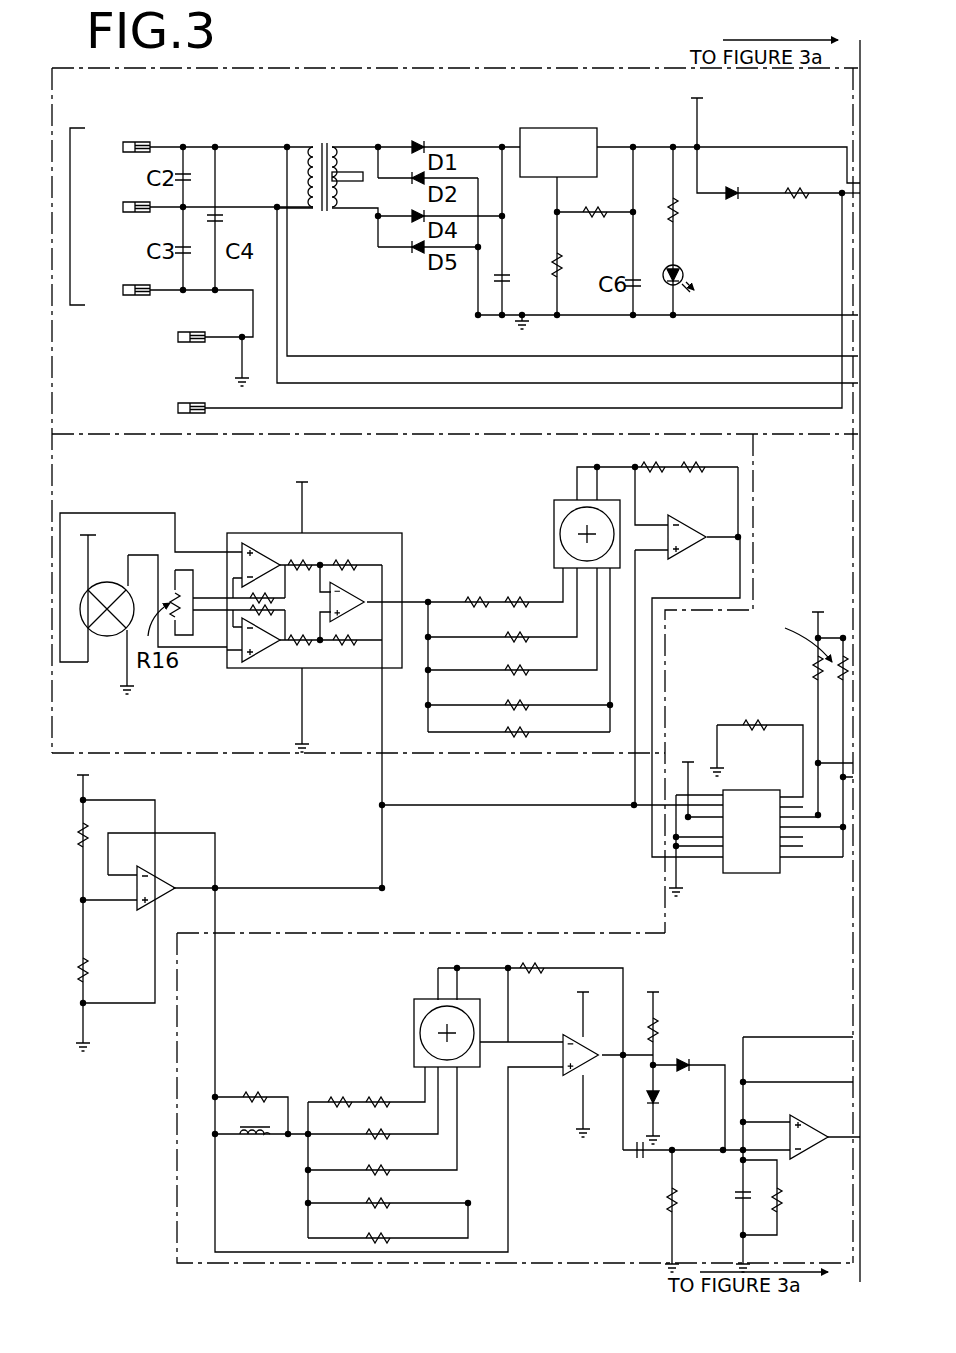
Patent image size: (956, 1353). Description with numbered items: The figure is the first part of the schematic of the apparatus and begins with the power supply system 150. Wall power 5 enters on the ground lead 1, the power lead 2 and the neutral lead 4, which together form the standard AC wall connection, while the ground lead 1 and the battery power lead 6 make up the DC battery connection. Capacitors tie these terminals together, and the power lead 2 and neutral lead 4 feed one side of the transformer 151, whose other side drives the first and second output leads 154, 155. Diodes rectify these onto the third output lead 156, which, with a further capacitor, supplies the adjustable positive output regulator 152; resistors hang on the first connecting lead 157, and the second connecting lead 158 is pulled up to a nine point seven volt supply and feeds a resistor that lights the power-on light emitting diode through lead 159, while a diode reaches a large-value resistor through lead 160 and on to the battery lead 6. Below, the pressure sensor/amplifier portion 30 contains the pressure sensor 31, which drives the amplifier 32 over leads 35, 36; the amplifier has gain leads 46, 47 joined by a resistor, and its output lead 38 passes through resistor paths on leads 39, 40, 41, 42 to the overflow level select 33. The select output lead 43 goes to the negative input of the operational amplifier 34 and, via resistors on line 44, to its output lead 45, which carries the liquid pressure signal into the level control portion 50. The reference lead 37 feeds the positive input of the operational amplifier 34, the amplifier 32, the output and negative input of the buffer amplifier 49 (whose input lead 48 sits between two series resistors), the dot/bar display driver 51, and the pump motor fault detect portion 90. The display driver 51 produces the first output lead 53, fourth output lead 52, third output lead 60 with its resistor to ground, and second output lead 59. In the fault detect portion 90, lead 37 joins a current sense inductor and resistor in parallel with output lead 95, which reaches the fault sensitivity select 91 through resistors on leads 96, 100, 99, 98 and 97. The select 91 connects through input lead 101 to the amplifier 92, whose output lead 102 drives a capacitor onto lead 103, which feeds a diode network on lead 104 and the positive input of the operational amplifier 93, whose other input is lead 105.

The power supply system 150 is at (88, 196).
The wall power connection 5 is at (70, 262).
The power lead 2 is at (305, 143).
The neutral lead 4 is at (310, 242).
The ground lead 1 is at (748, 320).
The battery power lead 6 is at (838, 210).
The transformer 151 is at (327, 165).
The first output lead 154 is at (352, 147).
The second output lead 155 is at (348, 214).
The third output lead 156 is at (463, 145).
The adjustable positive output regulator 152 is at (681, 139).
The first connecting lead 157 is at (550, 214).
The second connecting lead 158 is at (662, 144).
The lead 159 is at (680, 246).
The lead 160 is at (762, 198).
The pressure sensor/amplifier portion 30 is at (404, 683).
The lead 35 is at (155, 511).
The lead 36 is at (160, 553).
The pressure sensor 31 is at (138, 610).
The lead 46 is at (239, 588).
The lead 47 is at (239, 616).
The amplifier 32 is at (327, 605).
The lead 37 is at (378, 712).
The output lead 38 is at (450, 600).
The lead 39 is at (560, 590).
The lead 40 is at (530, 632).
The lead 41 is at (585, 668).
The lead 42 is at (614, 710).
The overflow level select 33 is at (568, 534).
The select output lead 43 is at (657, 468).
The line 44 is at (680, 472).
The operational amplifier 34 is at (688, 636).
The output lead 45 is at (728, 540).
The level control portion 50 is at (816, 458).
The first output lead 53 is at (840, 700).
The fourth output lead 52 is at (805, 712).
The third output lead 60 is at (800, 755).
The dot/bar display driver 51 is at (738, 814).
The second output lead 59 is at (828, 862).
The input lead 48 is at (78, 922).
The amplifier 49 is at (150, 871).
The pump motor fault detect portion 90 is at (515, 1098).
The output lead 95 is at (294, 1128).
The lead 96 is at (365, 1098).
The lead 97 is at (472, 1200).
The lead 98 is at (450, 1162).
The lead 99 is at (442, 1104).
The lead 100 is at (430, 1086).
The input lead 101 is at (472, 966).
The pump motor fault sensitivity select 91 is at (473, 1016).
The amplifier 92 is at (599, 1054).
The lead 102 is at (627, 1030).
The lead 104 is at (648, 1054).
The lead 103 is at (690, 1136).
The lead 105 is at (743, 1052).
The operational amplifier 93 is at (825, 1145).